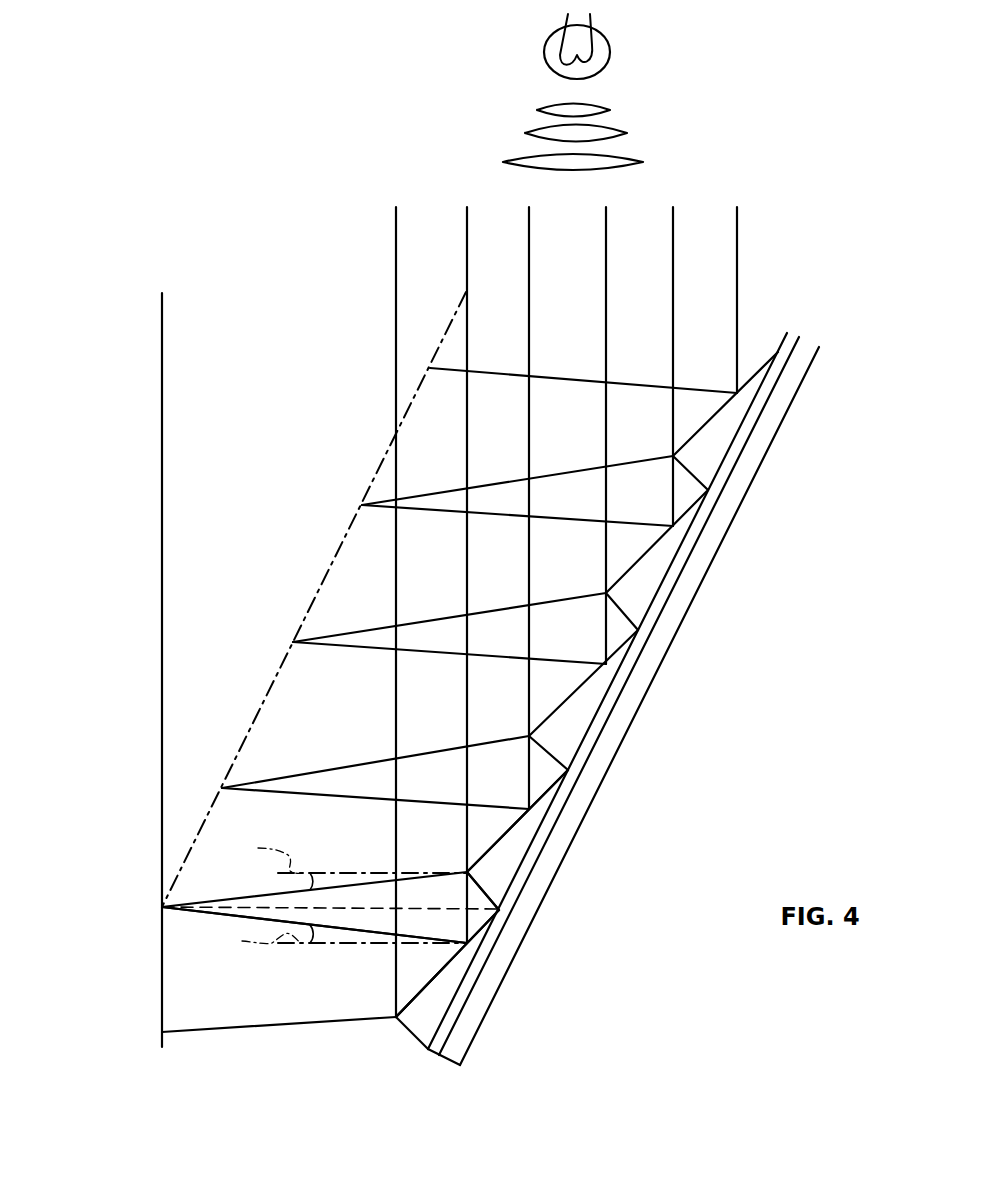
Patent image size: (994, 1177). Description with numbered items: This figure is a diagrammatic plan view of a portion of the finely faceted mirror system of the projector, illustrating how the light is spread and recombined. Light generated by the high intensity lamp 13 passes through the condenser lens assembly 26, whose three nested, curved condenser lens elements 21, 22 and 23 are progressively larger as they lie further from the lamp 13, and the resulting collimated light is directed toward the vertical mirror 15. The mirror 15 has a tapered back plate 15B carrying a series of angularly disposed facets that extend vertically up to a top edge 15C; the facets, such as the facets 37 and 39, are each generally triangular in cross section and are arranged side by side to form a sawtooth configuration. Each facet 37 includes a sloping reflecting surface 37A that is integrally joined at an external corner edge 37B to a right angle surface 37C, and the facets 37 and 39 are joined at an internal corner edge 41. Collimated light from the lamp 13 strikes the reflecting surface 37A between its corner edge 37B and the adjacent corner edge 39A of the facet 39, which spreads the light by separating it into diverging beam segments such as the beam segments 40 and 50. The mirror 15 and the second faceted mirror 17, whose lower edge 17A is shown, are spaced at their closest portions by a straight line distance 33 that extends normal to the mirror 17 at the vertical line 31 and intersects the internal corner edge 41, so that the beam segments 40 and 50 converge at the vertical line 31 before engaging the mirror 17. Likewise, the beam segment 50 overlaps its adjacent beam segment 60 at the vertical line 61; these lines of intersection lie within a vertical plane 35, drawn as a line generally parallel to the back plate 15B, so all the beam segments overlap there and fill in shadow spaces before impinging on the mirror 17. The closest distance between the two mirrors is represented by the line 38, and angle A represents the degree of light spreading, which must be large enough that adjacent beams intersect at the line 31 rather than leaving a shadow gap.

The high intensity lamp 13 is at (540, 53).
The condenser lens element 21 is at (587, 110).
The condenser lens element 22 is at (610, 133).
The condenser lens element 23 is at (523, 162).
The condenser lens assembly 26 is at (657, 140).
The lower edge 17A is at (160, 440).
The vertical plane 35 is at (333, 563).
The beam segment 60 is at (320, 722).
The vertical line 61 is at (222, 787).
The beam segment 50 is at (205, 783).
The straight line distance 33 is at (260, 897).
The vertical line 31 is at (160, 905).
The vertical mirror 15 is at (529, 937).
The tapered back plate 15B is at (700, 585).
The top edge 15C is at (445, 1060).
The facet 39 is at (505, 878).
The corner edge 39A is at (486, 852).
The internal corner edge 41 is at (541, 908).
The facet 37 is at (395, 1018).
The sloping reflecting surface 37A is at (465, 945).
The external corner edge 37B is at (415, 990).
The right angle surface 37C is at (403, 1020).
The beam segment 40 is at (240, 1000).
The line 38 is at (273, 1027).
The faceted mirror 17 is at (157, 1021).